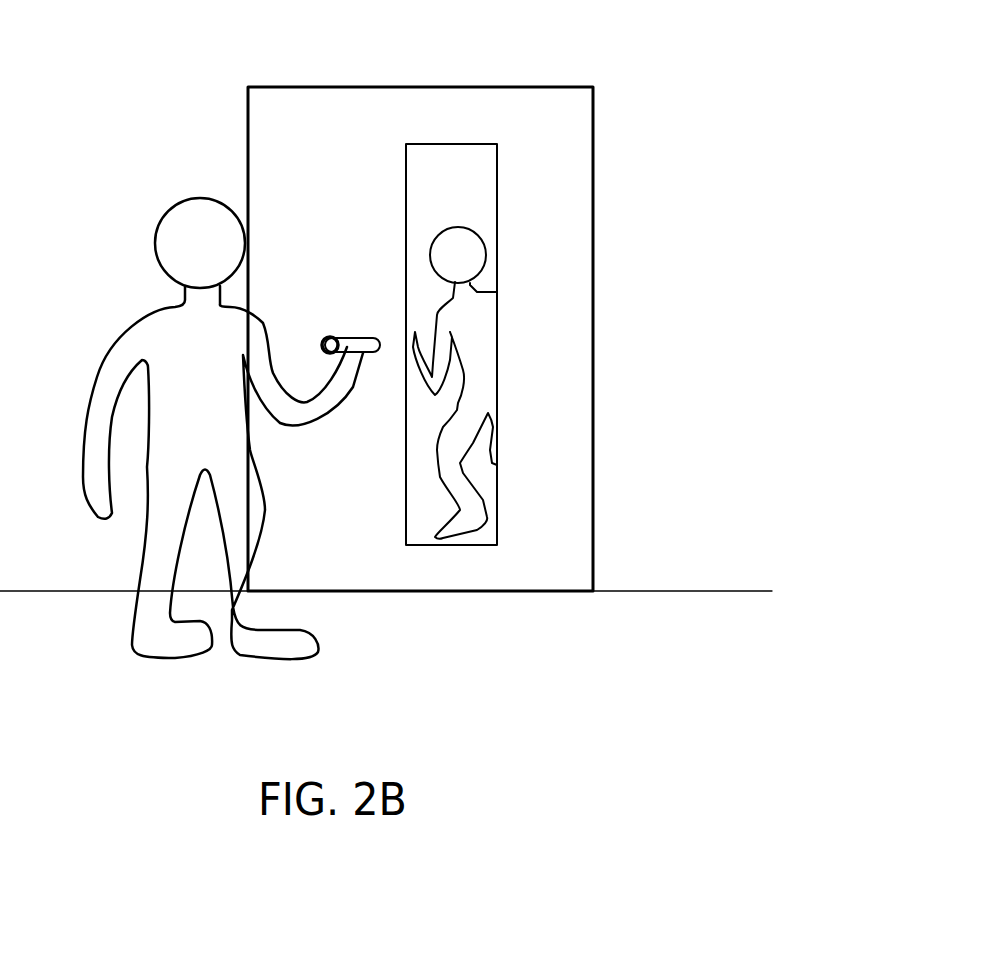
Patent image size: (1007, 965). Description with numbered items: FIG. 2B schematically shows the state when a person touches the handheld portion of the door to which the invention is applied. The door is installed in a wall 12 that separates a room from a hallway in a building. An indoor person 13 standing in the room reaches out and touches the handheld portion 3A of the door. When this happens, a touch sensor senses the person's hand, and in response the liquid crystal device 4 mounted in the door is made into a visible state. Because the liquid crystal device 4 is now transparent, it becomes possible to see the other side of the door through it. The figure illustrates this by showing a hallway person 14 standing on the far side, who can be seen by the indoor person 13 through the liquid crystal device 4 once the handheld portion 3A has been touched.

The wall 12 is at (690, 348).
The liquid crystal device 4 is at (442, 153).
The hallway person 14 is at (457, 252).
The indoor person 13 is at (197, 208).
The handheld portion 3A is at (338, 330).